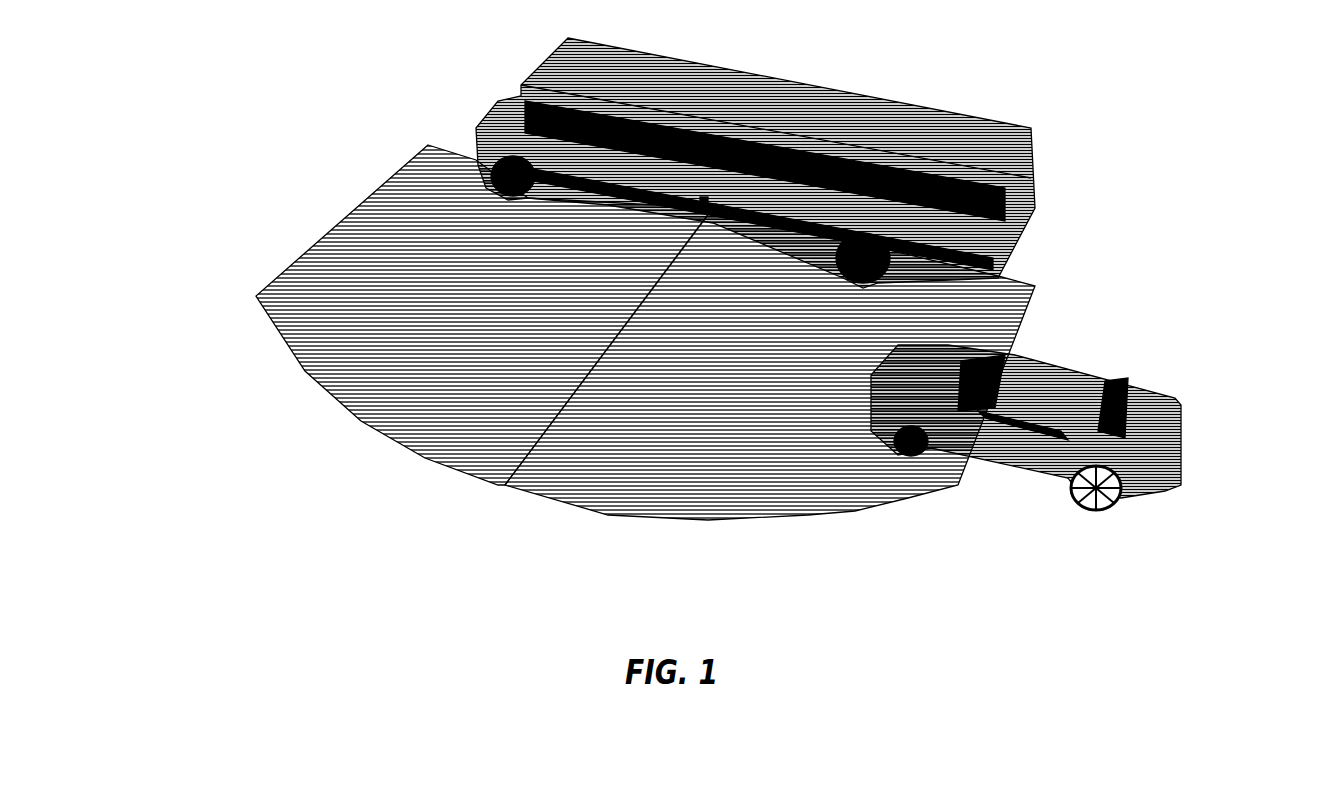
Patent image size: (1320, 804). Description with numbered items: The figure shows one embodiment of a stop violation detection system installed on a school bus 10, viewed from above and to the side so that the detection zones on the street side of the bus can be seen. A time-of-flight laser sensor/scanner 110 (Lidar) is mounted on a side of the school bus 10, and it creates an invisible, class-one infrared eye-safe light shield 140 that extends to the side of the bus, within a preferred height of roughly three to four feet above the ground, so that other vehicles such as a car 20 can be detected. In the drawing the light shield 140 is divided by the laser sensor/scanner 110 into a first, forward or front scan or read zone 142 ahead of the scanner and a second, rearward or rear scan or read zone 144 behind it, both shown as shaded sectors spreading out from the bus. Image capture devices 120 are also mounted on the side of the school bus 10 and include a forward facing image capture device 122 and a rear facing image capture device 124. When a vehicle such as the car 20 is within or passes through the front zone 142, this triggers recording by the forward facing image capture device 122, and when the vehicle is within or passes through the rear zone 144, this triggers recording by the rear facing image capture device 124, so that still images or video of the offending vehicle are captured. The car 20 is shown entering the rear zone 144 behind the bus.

The school bus 10 is at (737, 80).
The car 20 is at (1050, 362).
The time-of-flight laser sensor/scanner 110 is at (704, 190).
The image capture device 120 is at (682, 269).
The forward facing image capture device 122 is at (692, 194).
The rear facing image capture device 124 is at (710, 205).
The invisible light shield 140 is at (675, 297).
The forward scan or read zone 142 is at (405, 178).
The rear scan or read zone 144 is at (990, 290).